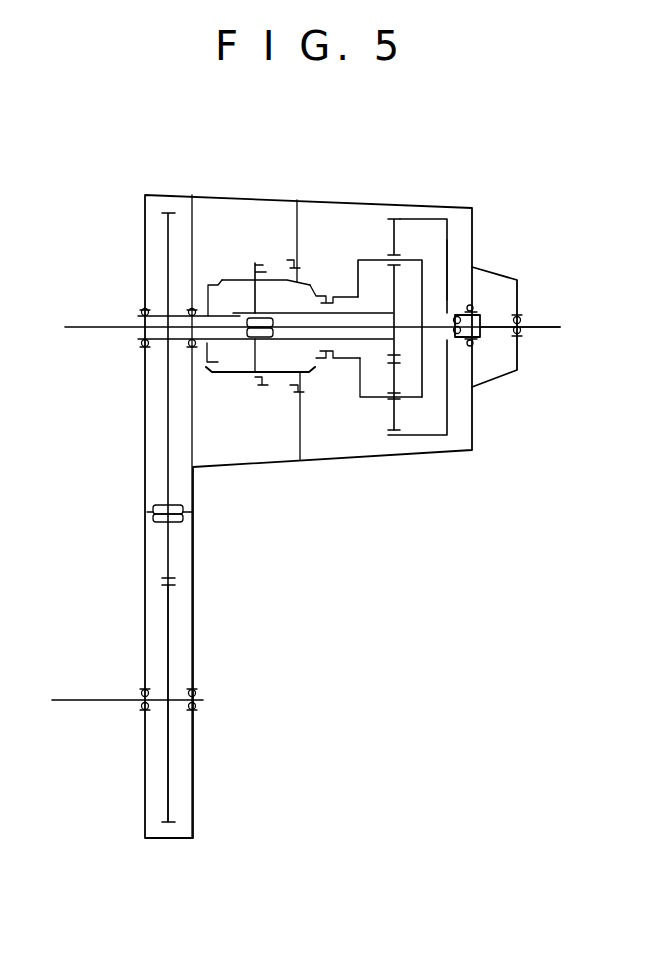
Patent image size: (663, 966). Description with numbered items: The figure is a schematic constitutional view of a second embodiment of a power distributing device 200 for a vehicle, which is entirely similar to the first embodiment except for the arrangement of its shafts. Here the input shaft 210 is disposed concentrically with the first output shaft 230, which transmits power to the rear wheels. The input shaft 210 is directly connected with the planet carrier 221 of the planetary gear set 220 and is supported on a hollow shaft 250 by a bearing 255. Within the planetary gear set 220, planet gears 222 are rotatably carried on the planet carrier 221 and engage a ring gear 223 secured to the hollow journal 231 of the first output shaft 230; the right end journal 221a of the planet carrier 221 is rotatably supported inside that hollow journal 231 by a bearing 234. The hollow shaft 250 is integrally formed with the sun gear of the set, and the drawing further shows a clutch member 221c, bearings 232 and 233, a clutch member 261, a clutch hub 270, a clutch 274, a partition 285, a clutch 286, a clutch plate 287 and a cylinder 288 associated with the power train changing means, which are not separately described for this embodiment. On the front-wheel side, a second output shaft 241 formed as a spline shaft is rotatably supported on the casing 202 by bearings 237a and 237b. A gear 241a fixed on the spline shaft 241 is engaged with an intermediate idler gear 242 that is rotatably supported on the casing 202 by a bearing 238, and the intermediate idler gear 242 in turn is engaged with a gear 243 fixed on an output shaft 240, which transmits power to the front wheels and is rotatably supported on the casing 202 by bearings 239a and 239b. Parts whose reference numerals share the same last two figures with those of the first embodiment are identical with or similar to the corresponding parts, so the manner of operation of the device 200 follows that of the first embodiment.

The power distributing device 200 is at (248, 646).
The casing 202 is at (231, 196).
The input shaft 210 is at (93, 326).
The planetary gear set 220 is at (427, 211).
The planet carrier 221 is at (375, 259).
The right end journal of planet carrier 221a is at (446, 262).
The clutch 221c is at (321, 359).
The planet gears 222 is at (449, 240).
The ring gear 223 is at (400, 218).
The first output shaft 230 is at (548, 329).
The hollow journal 231 is at (457, 315).
The bearing 232 is at (474, 308).
The bearing 233 is at (521, 319).
The bearing 234 is at (472, 386).
The bearing 237a is at (191, 309).
The bearing 237b is at (144, 309).
The bearing 238 is at (160, 507).
The bearing 239a is at (194, 710).
The bearing 239b is at (144, 710).
The output shaft 240 is at (95, 702).
The second output shaft 241 is at (208, 371).
The gear 241a is at (167, 380).
The intermediate idler gear 242 is at (167, 548).
The gear 243 is at (167, 643).
The hollow shaft 250 is at (300, 375).
The bearing 255 is at (268, 340).
The clutch member 261 is at (336, 362).
The clutch hub 270 is at (249, 395).
The clutch 274 is at (258, 263).
The partition 285 is at (297, 236).
The clutch 286 is at (290, 261).
The clutch plate 287 is at (310, 283).
The cylinder 288 is at (208, 286).